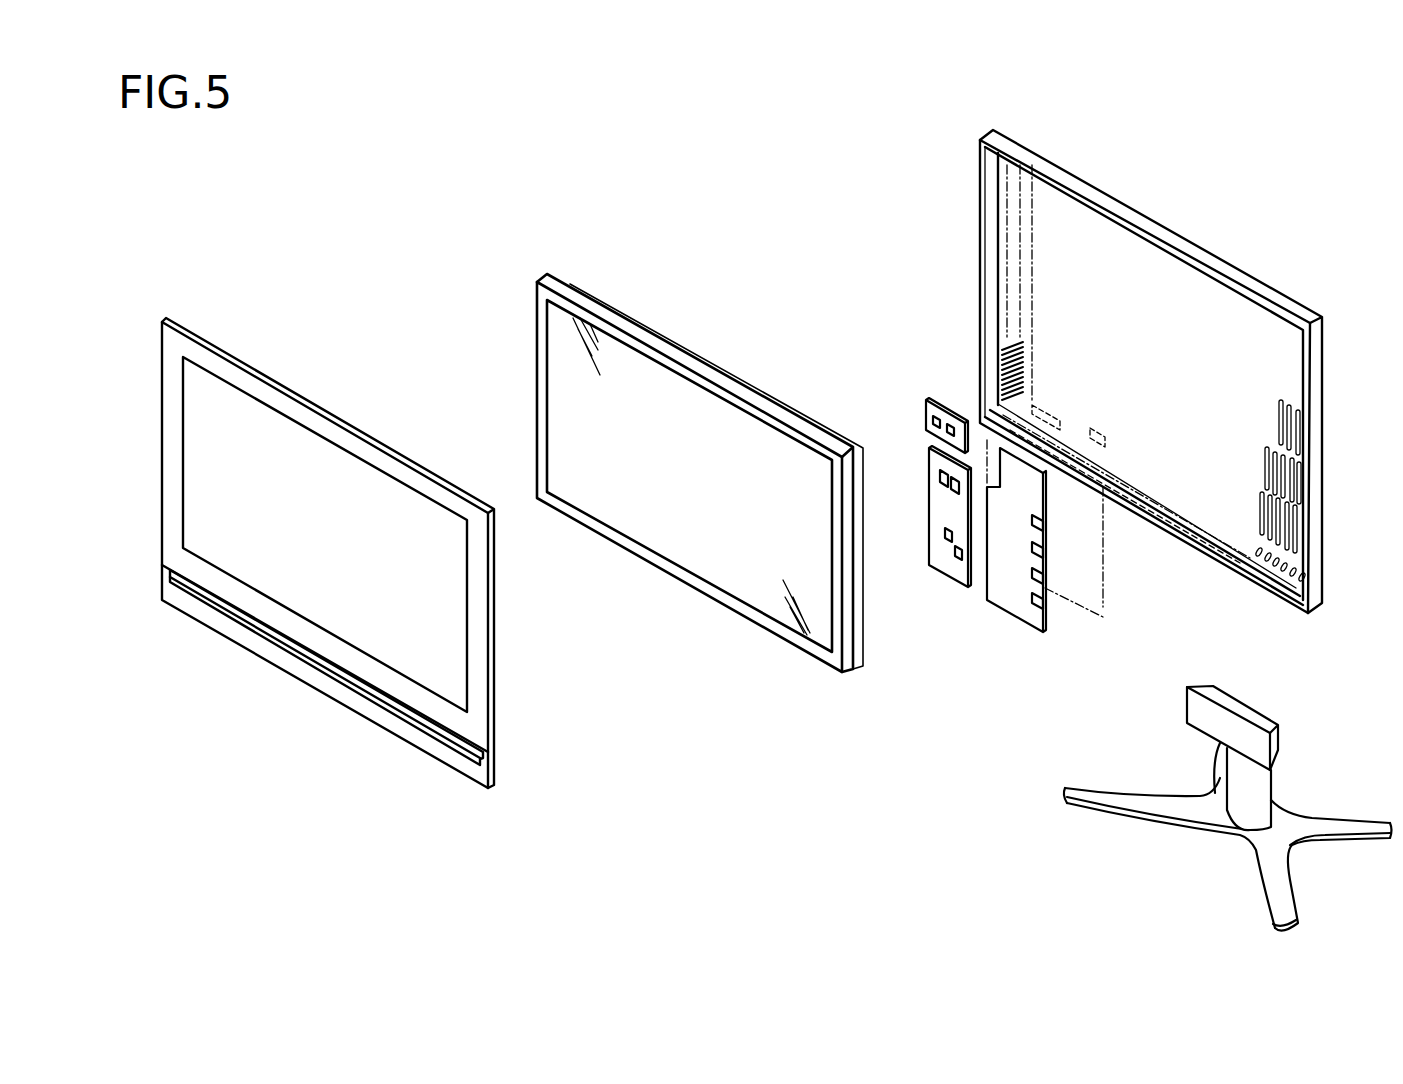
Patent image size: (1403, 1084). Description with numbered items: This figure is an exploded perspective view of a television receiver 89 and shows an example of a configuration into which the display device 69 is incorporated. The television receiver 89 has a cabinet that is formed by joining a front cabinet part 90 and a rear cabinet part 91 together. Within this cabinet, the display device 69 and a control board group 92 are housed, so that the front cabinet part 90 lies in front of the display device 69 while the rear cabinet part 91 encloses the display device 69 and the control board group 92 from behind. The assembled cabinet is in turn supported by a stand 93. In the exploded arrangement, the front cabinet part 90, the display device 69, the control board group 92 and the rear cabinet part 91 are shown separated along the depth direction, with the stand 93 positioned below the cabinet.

The television receiver 89 is at (729, 199).
The front cabinet part 90 is at (308, 400).
The display device 69 is at (643, 318).
The rear cabinet part 91 is at (1142, 210).
The control board group 92 is at (905, 397).
The stand 93 is at (1273, 777).